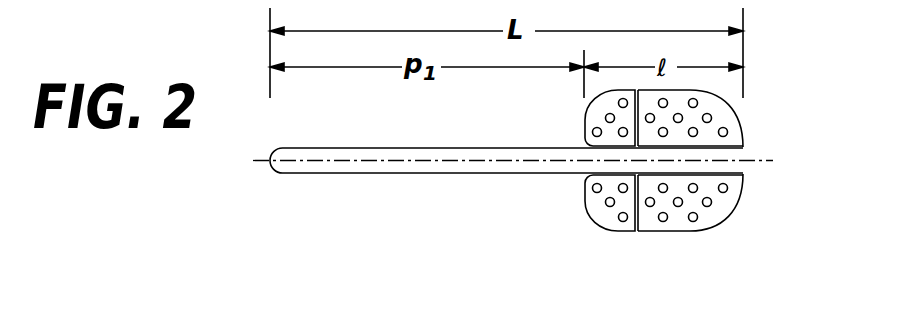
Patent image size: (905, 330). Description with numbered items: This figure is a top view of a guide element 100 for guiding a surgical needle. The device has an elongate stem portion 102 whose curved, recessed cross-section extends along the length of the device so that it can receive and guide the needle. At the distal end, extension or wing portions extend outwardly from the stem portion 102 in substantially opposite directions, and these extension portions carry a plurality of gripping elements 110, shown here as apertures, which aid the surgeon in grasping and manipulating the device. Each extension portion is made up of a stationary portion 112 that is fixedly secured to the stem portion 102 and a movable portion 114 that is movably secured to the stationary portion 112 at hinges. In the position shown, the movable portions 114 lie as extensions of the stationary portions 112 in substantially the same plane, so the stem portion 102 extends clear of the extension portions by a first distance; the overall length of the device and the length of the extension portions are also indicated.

The guide element 100 is at (413, 205).
The stem portion 102 is at (362, 174).
The gripping elements 110 is at (695, 222).
The stationary portion 112 is at (737, 122).
The movable portion 114 is at (585, 115).